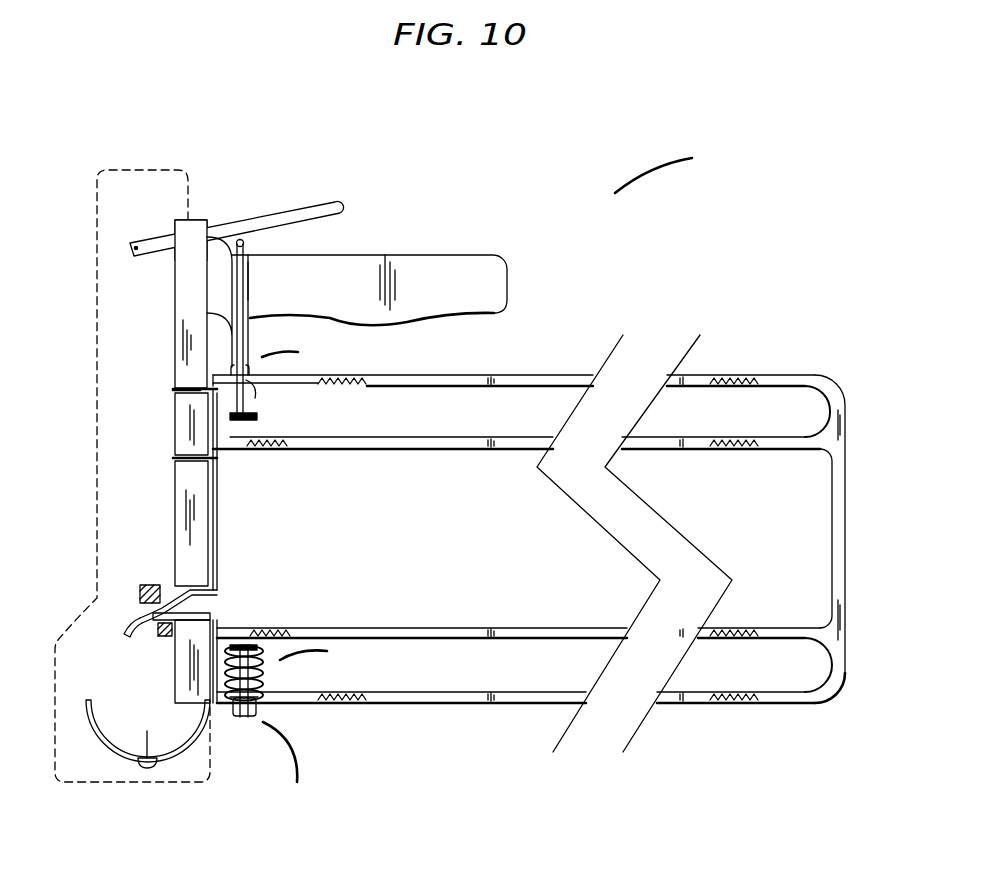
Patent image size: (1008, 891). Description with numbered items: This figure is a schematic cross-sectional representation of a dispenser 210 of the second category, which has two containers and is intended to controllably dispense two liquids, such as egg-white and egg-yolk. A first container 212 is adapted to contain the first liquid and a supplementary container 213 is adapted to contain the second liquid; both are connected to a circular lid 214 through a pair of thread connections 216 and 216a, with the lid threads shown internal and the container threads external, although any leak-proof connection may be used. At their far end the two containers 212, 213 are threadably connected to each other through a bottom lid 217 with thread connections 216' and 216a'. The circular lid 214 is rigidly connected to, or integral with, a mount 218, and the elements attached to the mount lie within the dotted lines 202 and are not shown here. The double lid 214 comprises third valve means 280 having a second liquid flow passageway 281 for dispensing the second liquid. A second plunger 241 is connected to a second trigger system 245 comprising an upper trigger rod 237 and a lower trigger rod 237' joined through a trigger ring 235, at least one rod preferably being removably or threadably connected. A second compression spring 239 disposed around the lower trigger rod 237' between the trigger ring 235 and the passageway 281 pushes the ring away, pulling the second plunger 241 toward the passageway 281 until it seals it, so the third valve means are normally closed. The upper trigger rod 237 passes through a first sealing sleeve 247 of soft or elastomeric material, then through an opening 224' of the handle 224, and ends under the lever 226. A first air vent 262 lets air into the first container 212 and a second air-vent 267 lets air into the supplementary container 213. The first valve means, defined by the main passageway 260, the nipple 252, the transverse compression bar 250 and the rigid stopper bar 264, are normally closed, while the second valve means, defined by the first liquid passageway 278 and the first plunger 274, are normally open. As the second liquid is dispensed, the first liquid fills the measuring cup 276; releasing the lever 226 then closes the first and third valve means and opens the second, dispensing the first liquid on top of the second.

The dotted lines 202 is at (128, 180).
The dispenser 210 is at (673, 169).
The first container 212 is at (470, 452).
The supplementary container 213 is at (557, 373).
The circular lid 214 is at (232, 357).
The thread connection 216 is at (295, 538).
The thread connection 216a is at (376, 539).
The thread connection 216' is at (743, 538).
The thread connection 216a' is at (723, 539).
The bottom lid 217 is at (838, 520).
The mount 218 is at (173, 425).
The handle 224 is at (385, 288).
The opening 224' is at (296, 281).
The lever 226 is at (307, 215).
The trigger ring 235 is at (260, 417).
The upper trigger rod 237 is at (296, 313).
The lower trigger rod 237' is at (224, 726).
The second compression spring 239 is at (263, 670).
The second plunger 241 is at (252, 718).
The second trigger system 245 is at (313, 502).
The first sealing sleeve 247 is at (255, 385).
The transverse compression bar 250 is at (143, 583).
The nipple 252 is at (127, 620).
The main passageway 260 is at (200, 603).
The first air vent 262 is at (170, 460).
The rigid stopper bar 264 is at (137, 638).
The second air-vent 267 is at (172, 392).
The first plunger 274 is at (148, 770).
The measuring cup 276 is at (110, 732).
The first liquid passageway 278 is at (140, 757).
The third valve means 280 is at (290, 767).
The second liquid flow passageway 281 is at (263, 706).